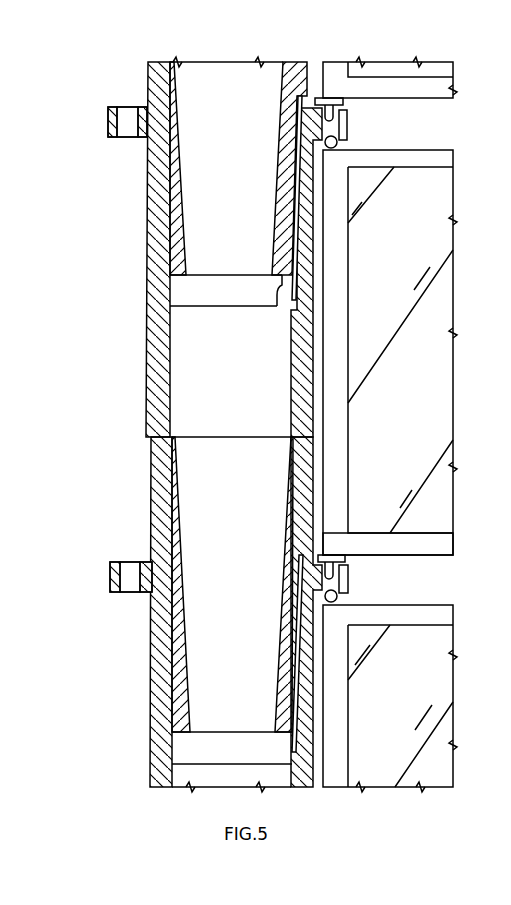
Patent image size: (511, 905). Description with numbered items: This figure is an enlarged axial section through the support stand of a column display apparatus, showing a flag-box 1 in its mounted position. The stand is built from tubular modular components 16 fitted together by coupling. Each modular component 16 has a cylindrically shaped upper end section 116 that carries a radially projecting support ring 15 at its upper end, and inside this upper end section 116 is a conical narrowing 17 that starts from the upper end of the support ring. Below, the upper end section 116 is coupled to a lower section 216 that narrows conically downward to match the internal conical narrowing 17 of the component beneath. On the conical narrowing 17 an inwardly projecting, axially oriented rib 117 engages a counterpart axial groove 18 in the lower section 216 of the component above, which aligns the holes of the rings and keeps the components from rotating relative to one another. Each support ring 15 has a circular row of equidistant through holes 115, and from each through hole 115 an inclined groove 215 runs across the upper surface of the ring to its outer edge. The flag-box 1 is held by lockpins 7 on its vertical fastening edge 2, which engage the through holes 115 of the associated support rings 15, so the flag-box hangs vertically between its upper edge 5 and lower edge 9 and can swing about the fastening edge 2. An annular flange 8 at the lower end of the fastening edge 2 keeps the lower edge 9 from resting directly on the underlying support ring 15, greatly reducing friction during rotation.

The flag-box 1 is at (442, 62).
The vertical fastening edge 2 is at (341, 454).
The upper edge 5 is at (428, 158).
The lockpin 7 is at (338, 143).
The annular flange 8 is at (342, 556).
The lower edge 9 is at (440, 553).
The support ring 15 is at (109, 122).
The modular component 16 is at (207, 424).
The conical narrowing 17 is at (170, 298).
The axial groove 18 is at (298, 102).
The through hole 115 is at (128, 128).
The upper end section 116 is at (153, 230).
The rib 117 is at (282, 308).
The groove 215 is at (113, 107).
The lower section 216 is at (153, 478).